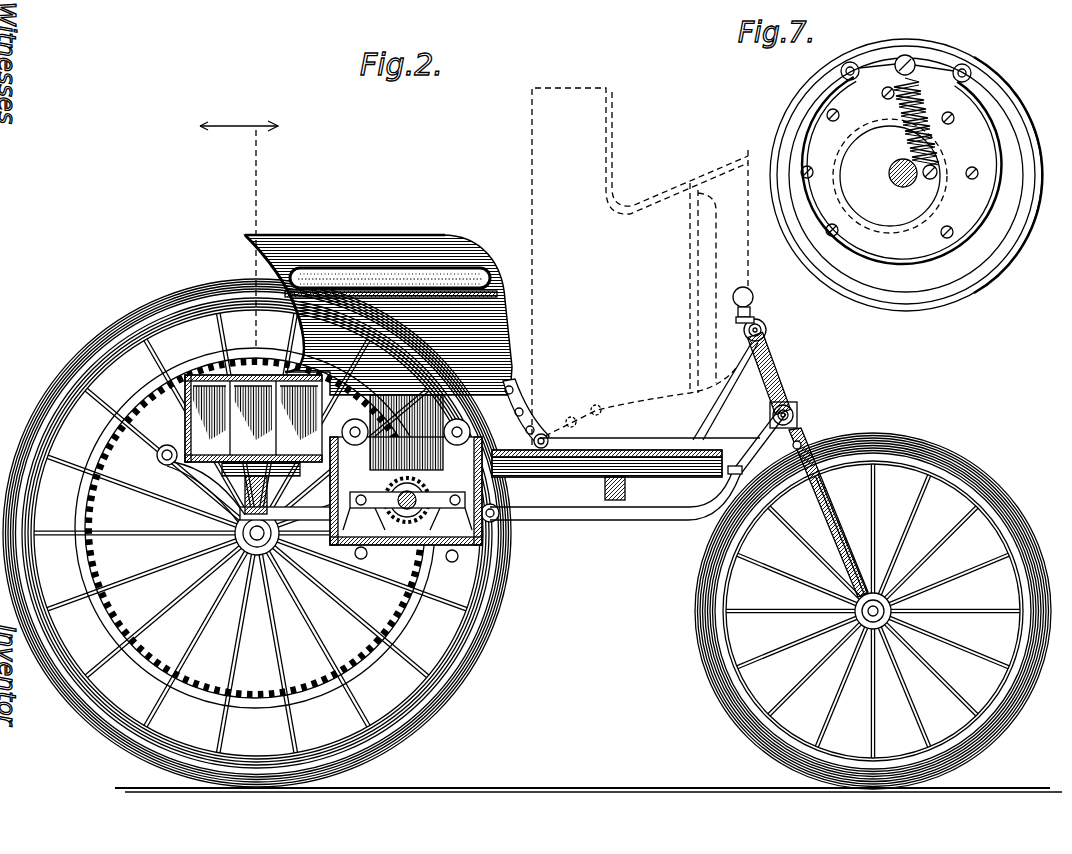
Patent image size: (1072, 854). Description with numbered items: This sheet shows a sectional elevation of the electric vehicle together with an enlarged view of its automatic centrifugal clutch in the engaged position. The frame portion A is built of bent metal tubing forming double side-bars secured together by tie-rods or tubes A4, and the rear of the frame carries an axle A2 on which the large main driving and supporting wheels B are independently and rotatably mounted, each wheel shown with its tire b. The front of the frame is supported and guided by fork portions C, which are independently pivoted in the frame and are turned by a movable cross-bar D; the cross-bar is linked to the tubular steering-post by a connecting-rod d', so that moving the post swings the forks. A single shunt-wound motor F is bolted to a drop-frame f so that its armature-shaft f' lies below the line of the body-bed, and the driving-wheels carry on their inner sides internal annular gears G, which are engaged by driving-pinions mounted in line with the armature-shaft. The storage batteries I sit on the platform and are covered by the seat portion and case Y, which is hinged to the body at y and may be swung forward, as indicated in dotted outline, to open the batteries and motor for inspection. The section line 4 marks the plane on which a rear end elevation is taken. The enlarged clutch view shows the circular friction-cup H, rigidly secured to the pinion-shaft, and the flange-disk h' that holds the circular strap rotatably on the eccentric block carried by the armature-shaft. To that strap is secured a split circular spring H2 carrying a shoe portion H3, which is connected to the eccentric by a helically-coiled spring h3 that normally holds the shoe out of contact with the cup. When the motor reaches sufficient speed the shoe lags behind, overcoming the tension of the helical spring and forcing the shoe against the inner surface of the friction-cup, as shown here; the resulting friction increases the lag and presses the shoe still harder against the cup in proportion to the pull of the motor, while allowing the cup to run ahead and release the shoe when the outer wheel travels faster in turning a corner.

In FIG. 2, the section line 4 is at (239, 223).
In FIG. 2, the seat portion and case Y is at (366, 244).
In FIG. 2, the hinge y is at (546, 432).
In FIG. 2, the main driving and supporting wheels B is at (80, 362).
In FIG. 2, the pneumatic tire b is at (471, 662).
In FIG. 2, the frame portion A is at (592, 522).
In FIG. 2, the axle A2 is at (180, 572).
In FIG. 2, the tie-rods or tubes A4 is at (157, 456).
In FIG. 2, the internal annular gears G is at (92, 500).
In FIG. 2, the storage batteries I is at (253, 444).
In FIG. 2, the motor F is at (422, 430).
In FIG. 2, the armature-shaft f' is at (407, 495).
In FIG. 2, the drop-frame f is at (404, 571).
In FIG. 2, the cross-bar D is at (708, 515).
In FIG. 2, the connecting-rod d' is at (750, 510).
In FIG. 2, the fork portions C is at (812, 505).
In FIG. 7, the circular friction-cup H is at (790, 110).
In FIG. 7, the flange-disk h' is at (868, 175).
In FIG. 7, the split circular spring H2 is at (993, 118).
In FIG. 7, the shoe portion H3 is at (932, 58).
In FIG. 7, the helically-coiled spring h3 is at (927, 98).